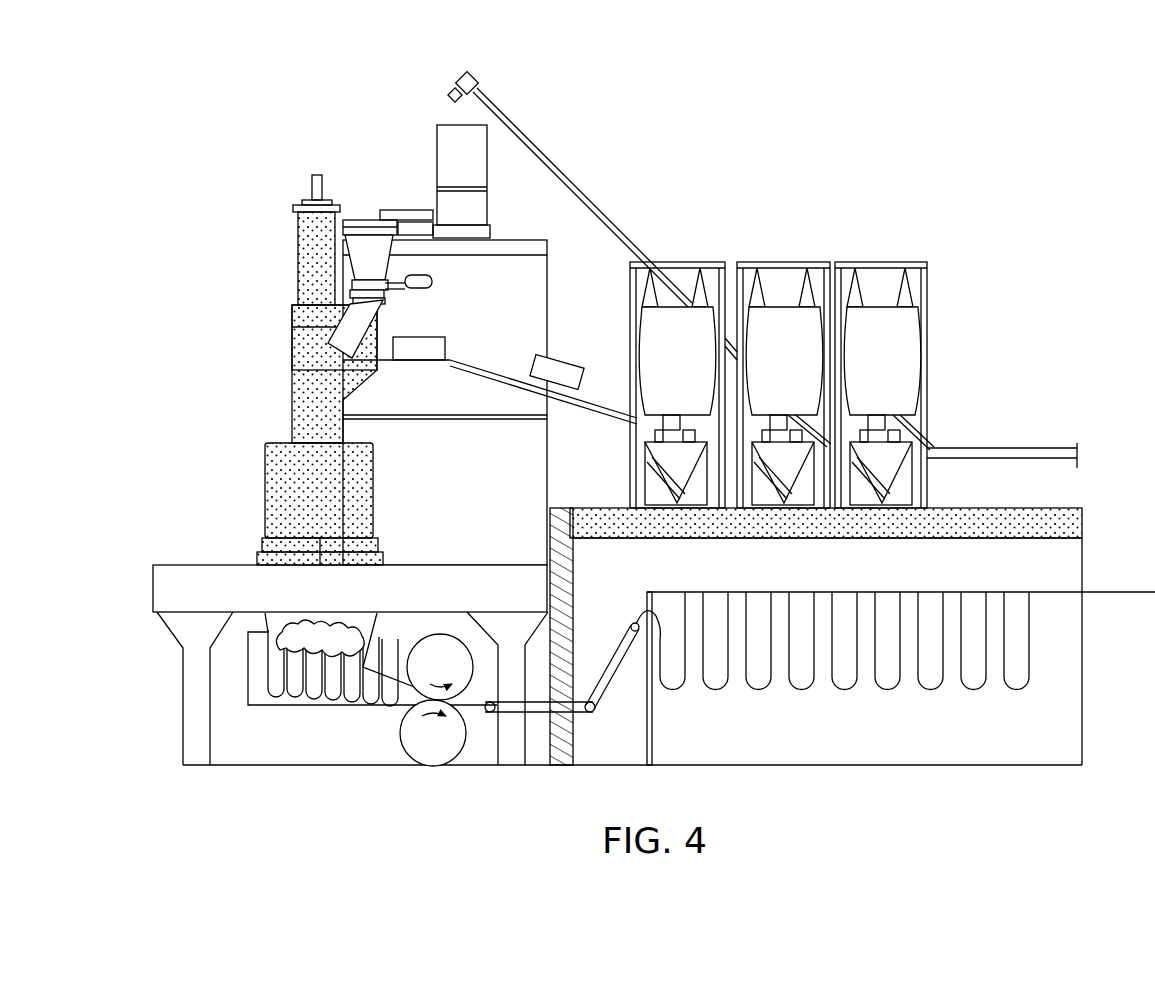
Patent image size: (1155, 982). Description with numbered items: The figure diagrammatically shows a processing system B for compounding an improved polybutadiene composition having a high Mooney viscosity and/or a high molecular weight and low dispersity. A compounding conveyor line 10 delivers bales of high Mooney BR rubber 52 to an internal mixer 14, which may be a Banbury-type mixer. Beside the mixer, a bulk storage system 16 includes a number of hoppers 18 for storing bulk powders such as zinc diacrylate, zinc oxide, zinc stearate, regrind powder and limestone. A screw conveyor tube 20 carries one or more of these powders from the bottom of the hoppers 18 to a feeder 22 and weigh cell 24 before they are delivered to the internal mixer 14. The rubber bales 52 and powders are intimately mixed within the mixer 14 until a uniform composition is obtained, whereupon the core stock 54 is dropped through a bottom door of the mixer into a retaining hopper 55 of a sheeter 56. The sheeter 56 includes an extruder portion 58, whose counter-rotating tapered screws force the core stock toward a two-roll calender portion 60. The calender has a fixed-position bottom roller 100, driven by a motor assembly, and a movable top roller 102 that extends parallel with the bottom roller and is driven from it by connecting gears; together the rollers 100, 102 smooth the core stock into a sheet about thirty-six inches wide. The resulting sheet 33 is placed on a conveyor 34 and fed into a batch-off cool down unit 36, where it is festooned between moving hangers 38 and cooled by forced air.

The processing system B is at (952, 176).
The compounding conveyor line 10 is at (985, 452).
The internal mixer 14 is at (313, 373).
The bulk storage system 16 is at (818, 246).
The hoppers 18 is at (658, 340).
The screw conveyor tube 20 is at (550, 157).
The feeder 22 is at (447, 148).
The weigh cell 24 is at (367, 253).
The cut sheet 33 is at (617, 653).
The conveyor 34 is at (607, 680).
The batch-off cool down unit 36 is at (1066, 585).
The moving hangers 38 is at (895, 592).
The bales of high Mooney BR rubber 52 is at (425, 350).
The core stock 54 is at (302, 632).
The retaining hopper 55 is at (380, 632).
The sheeter 56 is at (349, 710).
The extruder portion 58 is at (287, 710).
The two-roll calender portion 60 is at (469, 751).
The bottom roller 100 is at (430, 752).
The top roller 102 is at (443, 643).